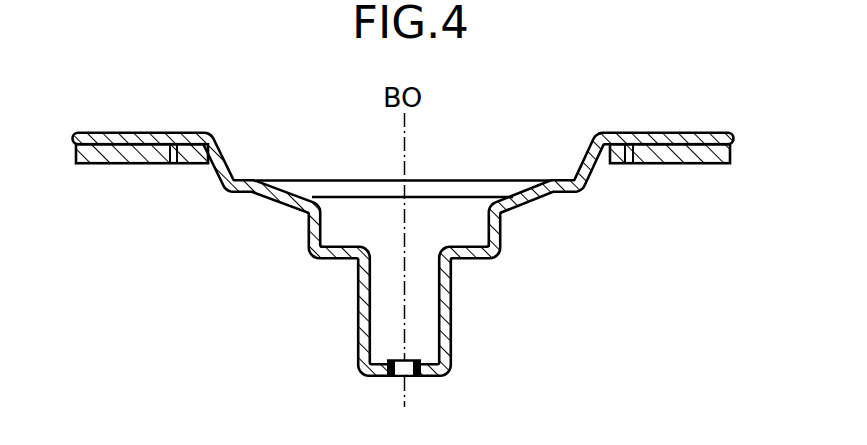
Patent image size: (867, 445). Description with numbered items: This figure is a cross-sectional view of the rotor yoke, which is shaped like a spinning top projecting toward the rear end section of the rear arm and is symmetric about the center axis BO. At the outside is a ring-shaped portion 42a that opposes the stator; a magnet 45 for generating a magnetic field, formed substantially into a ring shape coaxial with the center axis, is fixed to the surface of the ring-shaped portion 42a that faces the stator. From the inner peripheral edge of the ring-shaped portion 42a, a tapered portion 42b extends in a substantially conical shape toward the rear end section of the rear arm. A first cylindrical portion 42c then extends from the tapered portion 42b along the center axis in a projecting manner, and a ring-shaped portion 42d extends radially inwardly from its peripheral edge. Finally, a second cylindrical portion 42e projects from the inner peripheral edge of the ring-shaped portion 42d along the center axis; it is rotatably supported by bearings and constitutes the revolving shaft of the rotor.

The ring-shaped portion 42a is at (666, 134).
The tapered portion 42b is at (227, 222).
The first cylindrical portion 42c is at (500, 230).
The ring-shaped portion 42d is at (470, 260).
The second cylindrical portion 42e is at (452, 365).
The magnet 45 is at (693, 166).